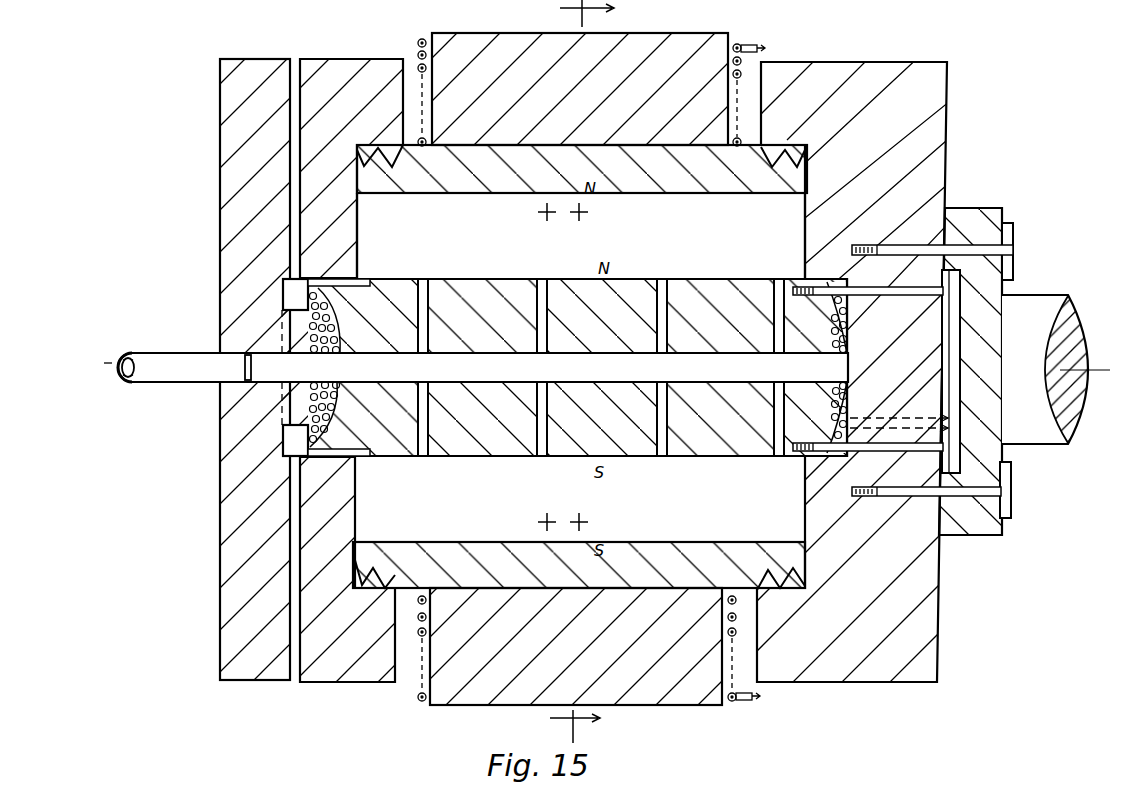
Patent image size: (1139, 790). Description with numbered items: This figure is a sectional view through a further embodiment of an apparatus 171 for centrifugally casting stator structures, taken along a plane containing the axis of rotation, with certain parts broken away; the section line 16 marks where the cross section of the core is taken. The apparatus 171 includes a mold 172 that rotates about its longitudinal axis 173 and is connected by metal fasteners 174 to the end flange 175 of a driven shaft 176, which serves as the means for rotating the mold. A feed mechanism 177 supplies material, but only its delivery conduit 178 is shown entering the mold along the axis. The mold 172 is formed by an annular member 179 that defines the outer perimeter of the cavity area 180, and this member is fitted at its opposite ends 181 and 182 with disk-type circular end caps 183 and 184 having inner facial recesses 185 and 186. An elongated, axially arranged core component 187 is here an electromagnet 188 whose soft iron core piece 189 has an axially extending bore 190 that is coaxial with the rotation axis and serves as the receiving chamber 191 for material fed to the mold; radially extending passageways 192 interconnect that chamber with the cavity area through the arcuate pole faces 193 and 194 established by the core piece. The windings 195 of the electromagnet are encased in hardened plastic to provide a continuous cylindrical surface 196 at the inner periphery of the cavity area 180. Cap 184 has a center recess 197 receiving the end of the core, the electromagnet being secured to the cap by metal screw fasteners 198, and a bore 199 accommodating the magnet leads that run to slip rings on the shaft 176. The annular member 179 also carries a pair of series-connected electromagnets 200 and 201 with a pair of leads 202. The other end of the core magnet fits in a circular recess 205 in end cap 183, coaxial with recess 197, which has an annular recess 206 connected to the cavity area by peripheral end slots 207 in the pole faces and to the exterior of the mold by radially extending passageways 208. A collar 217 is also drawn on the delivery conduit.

The section line 16 is at (582, 372).
The apparatus 171 is at (869, 409).
The mold 172 is at (858, 62).
The longitudinal axis 173 is at (79, 369).
The metal fasteners 174 is at (1014, 238).
The end flange 175 is at (995, 198).
The driven shaft 176 is at (1068, 296).
The feed mechanism 177 is at (505, 381).
The delivery conduit 178 is at (176, 352).
The annular member 179 is at (355, 555).
The cavity area 180 is at (809, 525).
The end of annular member 181 is at (357, 180).
The end of annular member 182 is at (807, 180).
The end cap 183 is at (222, 90).
The end cap 184 is at (869, 409).
The inner facial recess 185 is at (360, 213).
The inner facial recess 186 is at (805, 213).
The core component 187 is at (826, 356).
The electromagnet 188 is at (725, 370).
The core piece 189 is at (737, 457).
The bore 190 is at (505, 378).
The receiving chamber 191 is at (606, 376).
The radially extending passageways 192 is at (540, 330).
The arcuate pole face 193 is at (593, 368).
The arcuate pole face 194 is at (580, 457).
The windings 195 is at (330, 385).
The continuous cylindrical surface 196 is at (495, 457).
The center recess 197 is at (848, 360).
The metal screw fasteners 198 is at (946, 290).
The bore 199 is at (860, 418).
The electromagnet 200 is at (560, 33).
The electromagnet 201 is at (540, 705).
The leads 202 is at (748, 46).
The circular recess 205 is at (289, 340).
The annular recess 206 is at (283, 430).
The peripheral end slots 207 is at (362, 280).
The radially extending passageways 208 is at (296, 59).
The collar 217 is at (245, 365).